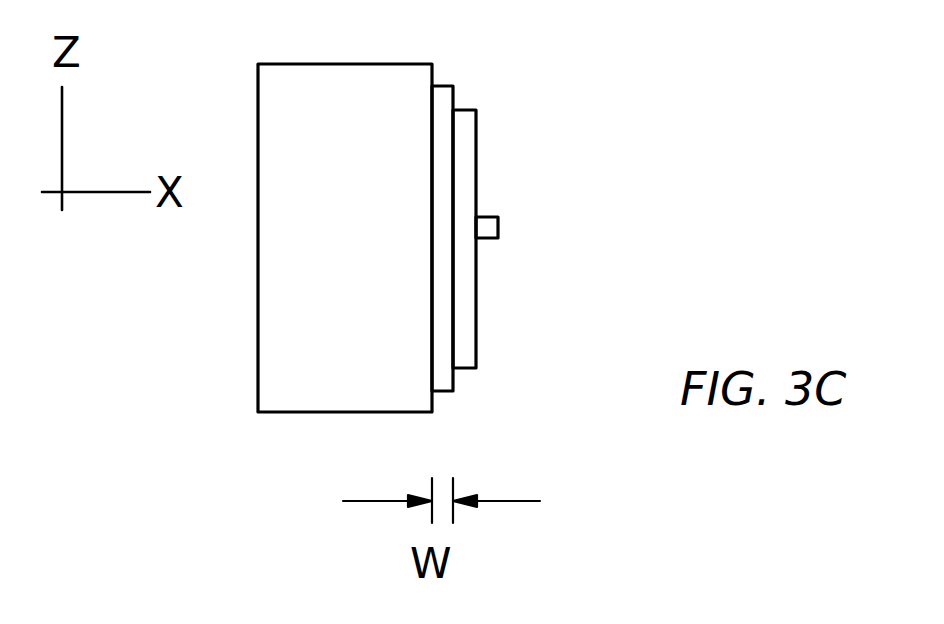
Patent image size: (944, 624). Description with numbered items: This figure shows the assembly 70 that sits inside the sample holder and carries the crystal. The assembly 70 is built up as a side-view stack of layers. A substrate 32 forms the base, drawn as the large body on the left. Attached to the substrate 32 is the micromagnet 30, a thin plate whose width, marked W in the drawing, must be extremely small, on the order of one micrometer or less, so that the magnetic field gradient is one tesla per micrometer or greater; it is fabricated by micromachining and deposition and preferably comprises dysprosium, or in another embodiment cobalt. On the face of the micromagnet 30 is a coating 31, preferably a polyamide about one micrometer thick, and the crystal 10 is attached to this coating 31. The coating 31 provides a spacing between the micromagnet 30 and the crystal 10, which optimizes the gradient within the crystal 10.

The assembly 70 is at (180, 345).
The substrate 32 is at (281, 413).
The micromagnet 30 is at (443, 85).
The coating 31 is at (465, 108).
The crystal 10 is at (499, 221).